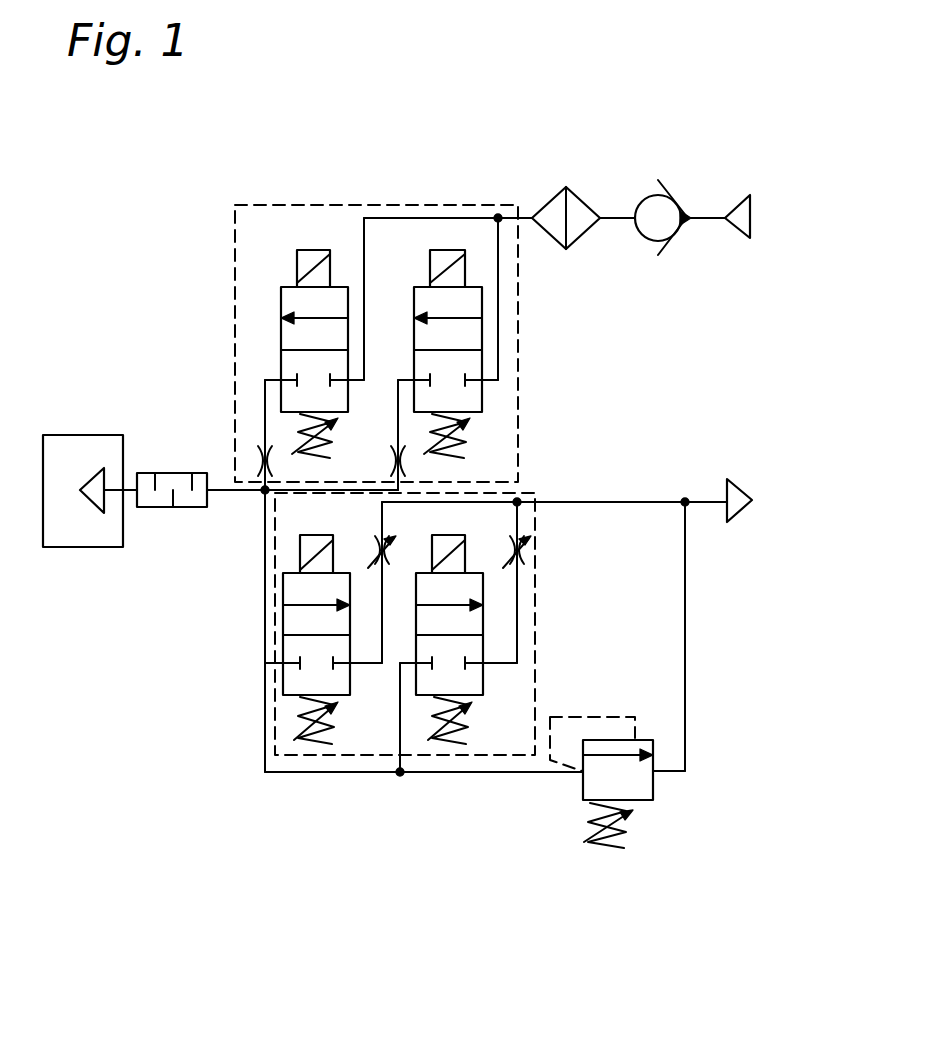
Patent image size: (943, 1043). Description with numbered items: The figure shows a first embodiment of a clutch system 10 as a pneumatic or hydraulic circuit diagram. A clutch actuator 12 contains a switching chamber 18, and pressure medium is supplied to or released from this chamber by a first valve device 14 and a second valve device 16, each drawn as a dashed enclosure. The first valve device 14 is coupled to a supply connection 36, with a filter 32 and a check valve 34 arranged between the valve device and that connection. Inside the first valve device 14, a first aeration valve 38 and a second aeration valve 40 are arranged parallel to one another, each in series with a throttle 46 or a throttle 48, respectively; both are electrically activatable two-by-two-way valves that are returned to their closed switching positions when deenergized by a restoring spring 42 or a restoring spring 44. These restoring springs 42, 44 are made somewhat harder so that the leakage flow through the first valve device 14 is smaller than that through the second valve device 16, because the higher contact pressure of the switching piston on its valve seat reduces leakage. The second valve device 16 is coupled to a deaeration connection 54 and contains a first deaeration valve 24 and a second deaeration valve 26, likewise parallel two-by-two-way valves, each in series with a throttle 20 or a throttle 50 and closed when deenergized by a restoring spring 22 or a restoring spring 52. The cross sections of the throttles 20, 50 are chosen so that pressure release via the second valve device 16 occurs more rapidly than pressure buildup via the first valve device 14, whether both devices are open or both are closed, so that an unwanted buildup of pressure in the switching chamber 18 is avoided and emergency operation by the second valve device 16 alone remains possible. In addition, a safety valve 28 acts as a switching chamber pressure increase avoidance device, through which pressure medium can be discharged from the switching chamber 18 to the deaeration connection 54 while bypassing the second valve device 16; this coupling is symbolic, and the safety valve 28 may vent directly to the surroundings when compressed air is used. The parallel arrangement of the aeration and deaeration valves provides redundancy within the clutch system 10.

The clutch system 10 is at (165, 882).
The clutch actuator 12 is at (75, 434).
The first valve device 14 is at (288, 202).
The second valve device 16 is at (540, 622).
The switching chamber 18 is at (93, 480).
The throttle 20 is at (378, 545).
The restoring spring 22 is at (340, 723).
The first deaeration valve 24 is at (282, 616).
The second deaeration valve 26 is at (416, 577).
The safety valve 28 is at (655, 787).
The filter 32 is at (553, 195).
The check valve 34 is at (652, 195).
The supply connection 36 is at (756, 205).
The first aeration valve 38 is at (295, 287).
The second aeration valve 40 is at (426, 286).
The restoring spring 42 is at (326, 446).
The restoring spring 44 is at (460, 446).
The throttle 46 is at (258, 470).
The throttle 48 is at (392, 472).
The throttle 50 is at (513, 545).
The restoring spring 52 is at (474, 723).
The deaeration connection 54 is at (744, 489).